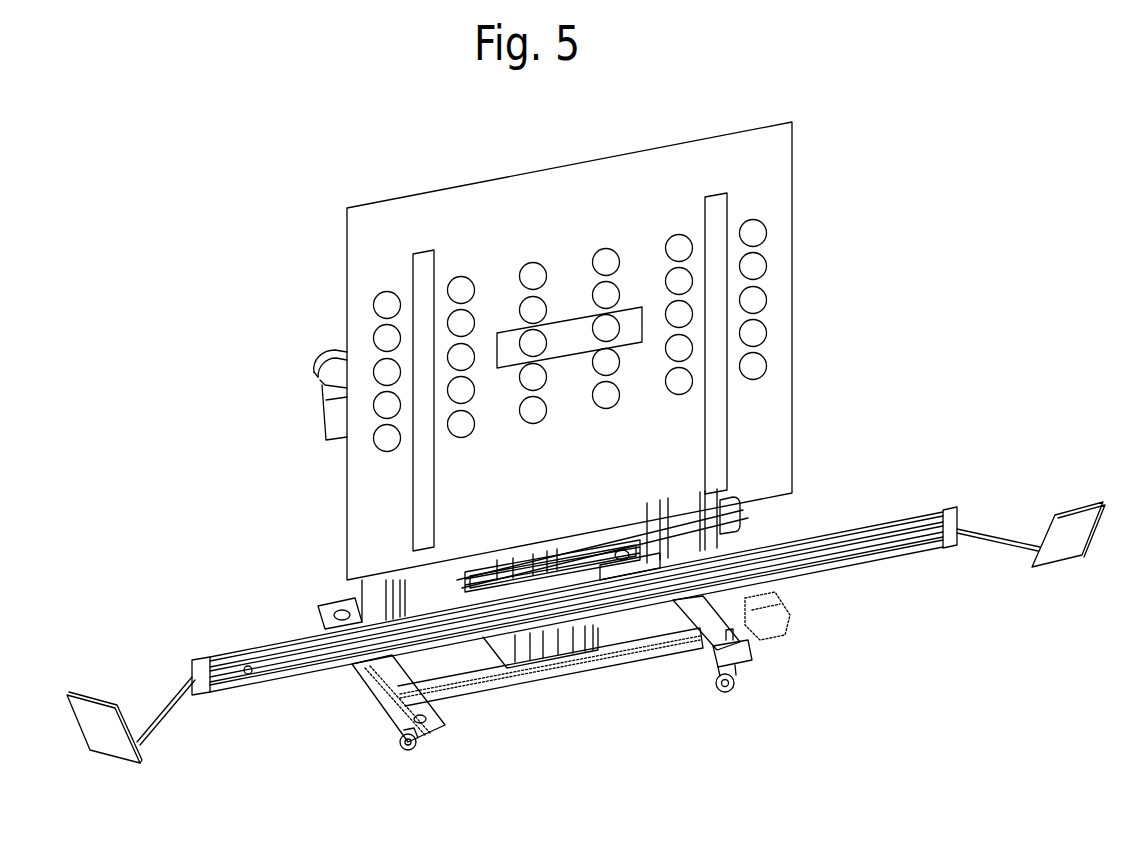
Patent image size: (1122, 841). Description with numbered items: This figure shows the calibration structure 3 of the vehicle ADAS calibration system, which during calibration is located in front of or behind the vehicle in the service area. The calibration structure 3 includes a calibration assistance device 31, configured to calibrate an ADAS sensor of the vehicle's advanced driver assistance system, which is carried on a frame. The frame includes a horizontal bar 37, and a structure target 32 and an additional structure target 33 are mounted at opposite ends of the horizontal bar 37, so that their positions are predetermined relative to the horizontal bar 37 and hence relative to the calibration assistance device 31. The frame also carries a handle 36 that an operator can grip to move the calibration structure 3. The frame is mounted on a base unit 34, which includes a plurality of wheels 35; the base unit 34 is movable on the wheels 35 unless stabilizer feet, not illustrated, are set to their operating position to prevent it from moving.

The calibration structure 3 is at (332, 223).
The calibration assistance device 31 is at (775, 192).
The structure target 32 is at (97, 717).
The additional structure target 33 is at (1075, 535).
The base unit 34 is at (493, 688).
The wheels 35 is at (410, 750).
The handle 36 is at (323, 357).
The horizontal bar 37 is at (862, 550).